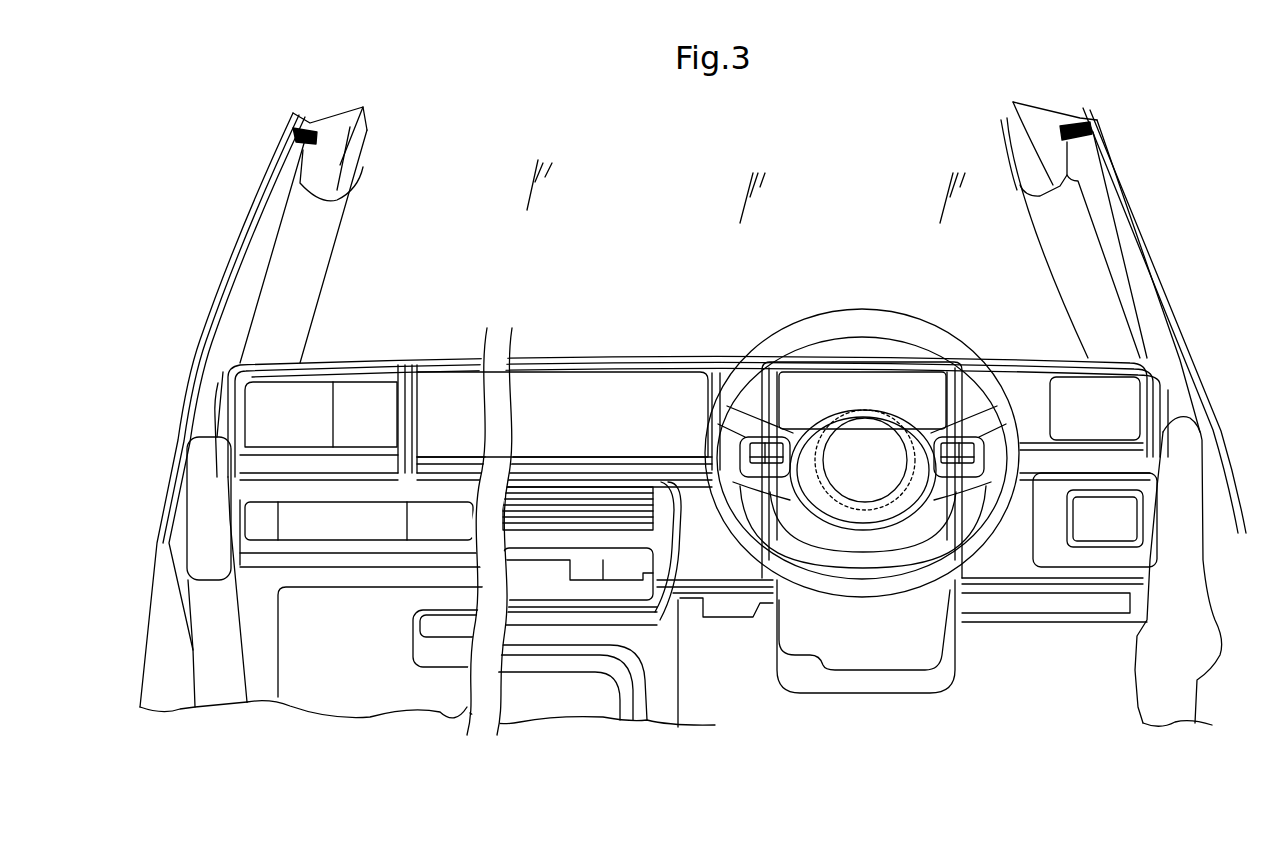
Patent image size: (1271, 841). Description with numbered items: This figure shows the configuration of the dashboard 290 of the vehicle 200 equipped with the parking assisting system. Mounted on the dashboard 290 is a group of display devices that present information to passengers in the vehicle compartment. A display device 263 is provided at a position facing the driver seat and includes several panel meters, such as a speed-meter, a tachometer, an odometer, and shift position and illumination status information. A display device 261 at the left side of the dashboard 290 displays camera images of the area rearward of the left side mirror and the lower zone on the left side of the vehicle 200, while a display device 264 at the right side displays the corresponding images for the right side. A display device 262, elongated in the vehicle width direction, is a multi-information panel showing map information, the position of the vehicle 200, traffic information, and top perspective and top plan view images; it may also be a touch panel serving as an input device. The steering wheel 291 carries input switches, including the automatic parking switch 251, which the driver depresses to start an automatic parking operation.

The vehicle 200 is at (1160, 160).
The automatic parking switch 251 is at (766, 425).
The display device 261 is at (297, 407).
The display device 262 is at (592, 398).
The display device 263 is at (853, 393).
The display device 264 is at (1072, 400).
The dashboard 290 is at (578, 345).
The steering wheel 291 is at (910, 322).